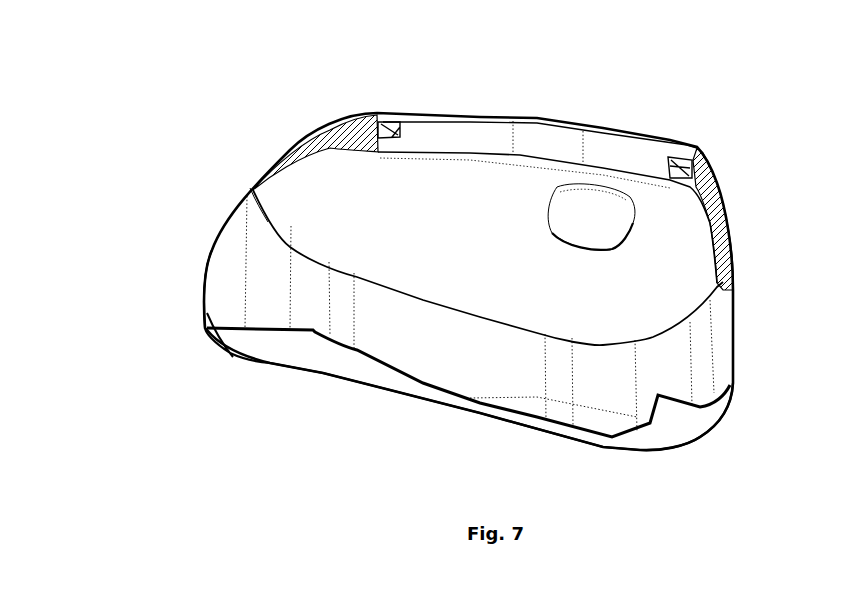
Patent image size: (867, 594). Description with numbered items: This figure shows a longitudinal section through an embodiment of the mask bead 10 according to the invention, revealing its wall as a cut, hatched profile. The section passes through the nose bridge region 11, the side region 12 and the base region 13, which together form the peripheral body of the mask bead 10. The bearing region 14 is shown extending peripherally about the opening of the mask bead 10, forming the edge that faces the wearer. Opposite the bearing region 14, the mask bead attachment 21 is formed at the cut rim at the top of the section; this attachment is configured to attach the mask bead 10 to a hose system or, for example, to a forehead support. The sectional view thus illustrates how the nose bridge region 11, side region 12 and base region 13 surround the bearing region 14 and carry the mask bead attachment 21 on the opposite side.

The mask bead 10 is at (410, 271).
The nose bridge region 11 is at (192, 325).
The side region 12 is at (423, 410).
The base region 13 is at (718, 442).
The bearing region 14 is at (315, 348).
The mask bead attachment 21 is at (378, 138).